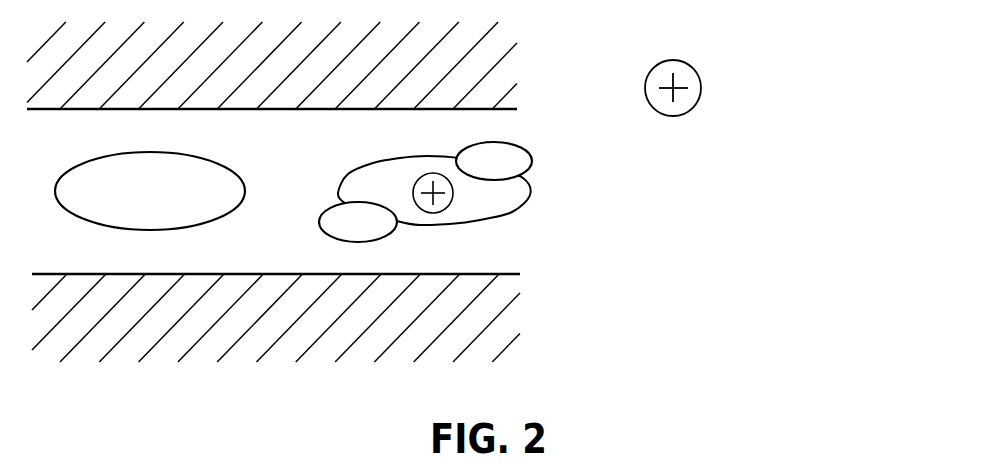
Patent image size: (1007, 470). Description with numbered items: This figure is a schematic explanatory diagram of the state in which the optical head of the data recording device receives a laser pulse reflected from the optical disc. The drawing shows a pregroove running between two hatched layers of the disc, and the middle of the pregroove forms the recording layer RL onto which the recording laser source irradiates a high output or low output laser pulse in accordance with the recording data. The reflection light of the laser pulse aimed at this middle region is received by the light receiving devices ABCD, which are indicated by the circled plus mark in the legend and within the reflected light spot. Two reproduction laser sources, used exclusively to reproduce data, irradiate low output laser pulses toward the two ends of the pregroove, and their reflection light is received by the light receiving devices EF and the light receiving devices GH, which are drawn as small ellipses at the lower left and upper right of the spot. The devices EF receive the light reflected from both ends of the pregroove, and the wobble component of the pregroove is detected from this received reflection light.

The light receiving devices A to D ABCD is at (717, 88).
The recording layer RL is at (572, 198).
The light receiving devices E and F EF is at (358, 222).
The light receiving devices G and H GH is at (494, 161).